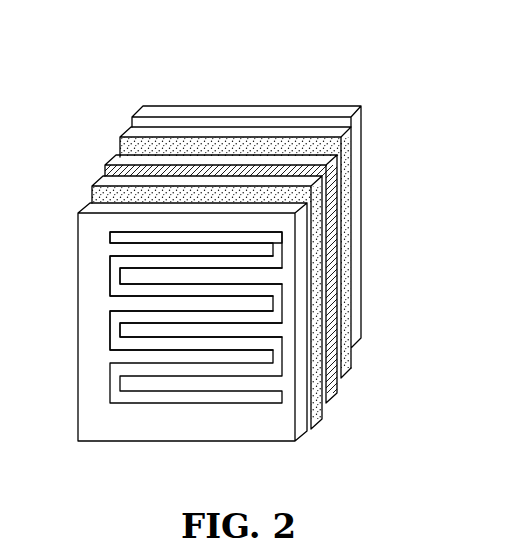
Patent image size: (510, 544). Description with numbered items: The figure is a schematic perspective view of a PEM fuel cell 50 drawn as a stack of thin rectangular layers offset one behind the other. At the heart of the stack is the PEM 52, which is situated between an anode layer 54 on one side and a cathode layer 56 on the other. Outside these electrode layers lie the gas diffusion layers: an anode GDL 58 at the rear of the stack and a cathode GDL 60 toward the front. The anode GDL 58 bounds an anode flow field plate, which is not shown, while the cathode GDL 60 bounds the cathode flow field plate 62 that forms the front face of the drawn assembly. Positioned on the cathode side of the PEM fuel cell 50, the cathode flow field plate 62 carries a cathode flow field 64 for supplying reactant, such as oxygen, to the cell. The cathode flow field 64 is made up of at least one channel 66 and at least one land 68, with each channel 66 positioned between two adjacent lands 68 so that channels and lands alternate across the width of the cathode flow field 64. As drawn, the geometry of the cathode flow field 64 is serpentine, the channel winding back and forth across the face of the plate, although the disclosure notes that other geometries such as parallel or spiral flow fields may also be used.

The PEM fuel cell 50 is at (337, 65).
The PEM 52 is at (338, 400).
The anode layer 54 is at (352, 373).
The cathode layer 56 is at (321, 423).
The anode GDL 58 is at (355, 343).
The cathode GDL 60 is at (303, 438).
The cathode flow field plate 62 is at (148, 396).
The cathode flow field 64 is at (110, 353).
The channel 66 is at (112, 282).
The land 68 is at (130, 249).